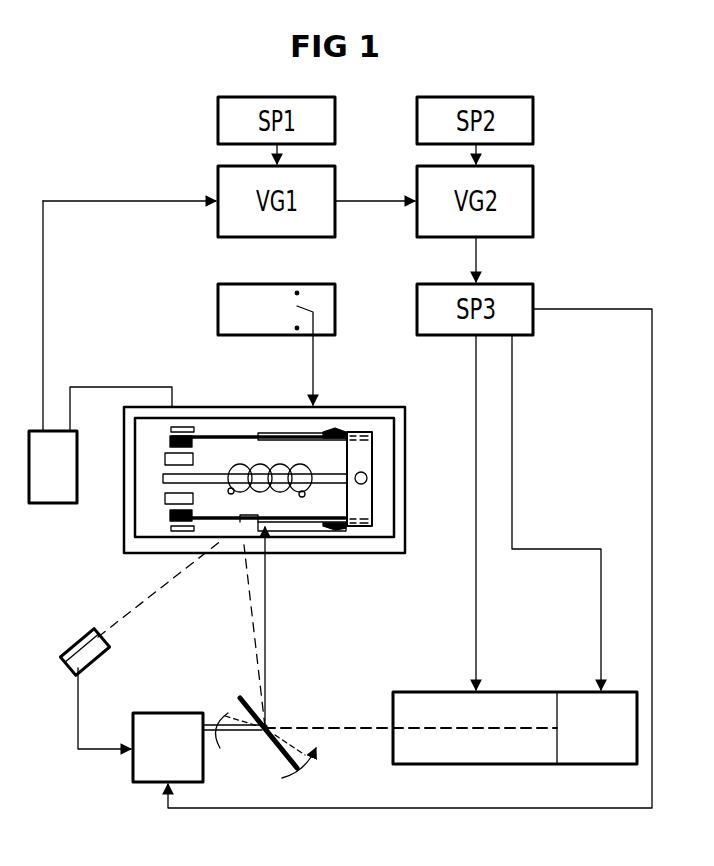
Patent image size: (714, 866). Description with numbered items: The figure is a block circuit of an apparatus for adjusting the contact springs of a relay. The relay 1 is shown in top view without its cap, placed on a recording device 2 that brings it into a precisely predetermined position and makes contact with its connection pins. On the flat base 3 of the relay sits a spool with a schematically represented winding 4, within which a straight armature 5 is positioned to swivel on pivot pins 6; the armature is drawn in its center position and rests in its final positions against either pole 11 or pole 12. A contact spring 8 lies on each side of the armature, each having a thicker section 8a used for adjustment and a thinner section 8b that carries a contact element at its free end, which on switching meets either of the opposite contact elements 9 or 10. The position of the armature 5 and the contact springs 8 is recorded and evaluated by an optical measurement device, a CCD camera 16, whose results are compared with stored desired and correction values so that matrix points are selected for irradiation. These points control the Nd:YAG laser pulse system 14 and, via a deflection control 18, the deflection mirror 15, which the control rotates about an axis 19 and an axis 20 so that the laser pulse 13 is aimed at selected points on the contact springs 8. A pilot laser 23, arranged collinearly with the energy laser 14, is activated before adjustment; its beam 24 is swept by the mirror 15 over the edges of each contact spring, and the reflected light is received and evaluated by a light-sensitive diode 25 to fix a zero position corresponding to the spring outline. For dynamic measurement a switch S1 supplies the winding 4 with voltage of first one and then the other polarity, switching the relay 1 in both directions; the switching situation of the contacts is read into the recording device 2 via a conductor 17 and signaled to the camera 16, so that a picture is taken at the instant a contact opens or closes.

The relay 1 is at (385, 452).
The recording device 2 is at (405, 493).
The flat base 3 is at (368, 432).
The winding 4 is at (257, 463).
The armature 5 is at (212, 474).
The pivot pins 6 is at (368, 478).
The contact spring 8 is at (232, 437).
The thicker section 8a is at (295, 433).
The thinner section 8b is at (242, 518).
The opposite contact element 9 is at (168, 444).
The opposite contact element 10 is at (186, 427).
The pole 11 is at (164, 458).
The pole 12 is at (163, 498).
The laser pulse 13 is at (266, 652).
The Nd:YAG laser pulse system 14 is at (437, 692).
The deflection mirror 15 is at (278, 752).
The CCD camera 16 is at (50, 503).
The conductor 17 is at (83, 387).
The deflection control 18 is at (142, 772).
The axis 19 is at (234, 732).
The axis 20 is at (268, 722).
The pilot laser 23 is at (564, 692).
The beam 24 is at (249, 600).
The light-sensitive diode 25 is at (70, 640).
The switch S1 is at (308, 306).